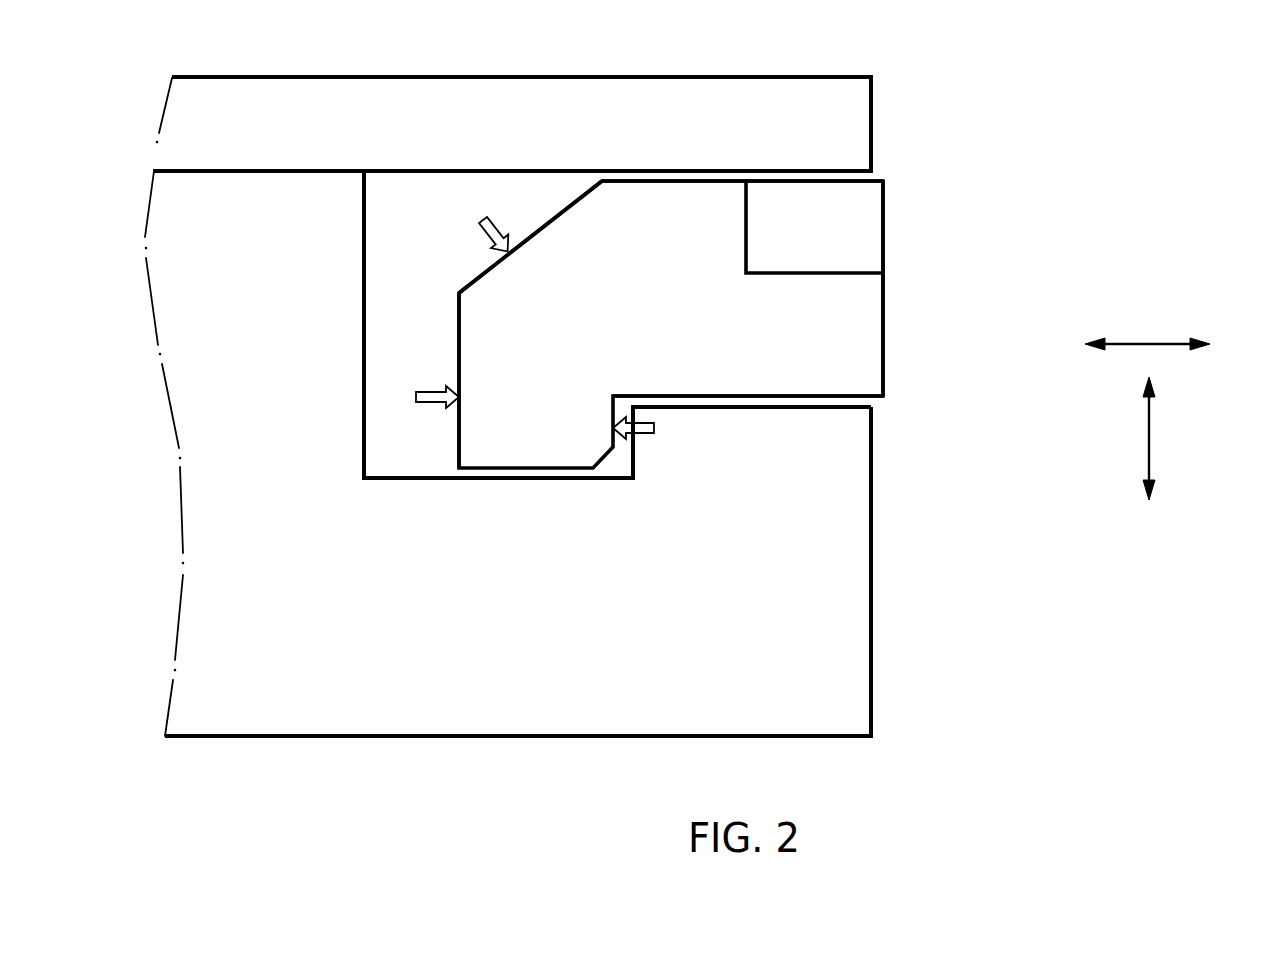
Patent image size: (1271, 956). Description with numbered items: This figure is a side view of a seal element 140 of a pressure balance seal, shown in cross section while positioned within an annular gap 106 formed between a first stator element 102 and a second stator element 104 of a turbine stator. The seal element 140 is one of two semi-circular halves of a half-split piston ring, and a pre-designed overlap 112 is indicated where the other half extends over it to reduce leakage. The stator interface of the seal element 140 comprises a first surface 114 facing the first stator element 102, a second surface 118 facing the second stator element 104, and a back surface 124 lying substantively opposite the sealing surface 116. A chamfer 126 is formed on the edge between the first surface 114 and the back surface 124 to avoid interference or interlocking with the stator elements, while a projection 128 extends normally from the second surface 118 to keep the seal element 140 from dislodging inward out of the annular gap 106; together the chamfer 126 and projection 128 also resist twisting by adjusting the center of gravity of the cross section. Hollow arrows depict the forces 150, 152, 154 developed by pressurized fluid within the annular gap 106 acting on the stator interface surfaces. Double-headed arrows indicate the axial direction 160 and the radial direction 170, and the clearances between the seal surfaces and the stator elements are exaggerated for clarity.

The first stator element 102 is at (683, 93).
The second stator element 104 is at (852, 628).
The annular gap 106 is at (373, 352).
The pre-designed overlap 112 is at (863, 232).
The first surface 114 is at (808, 180).
The sealing surface 116 is at (884, 366).
The second surface 118 is at (813, 400).
The back surface 124 is at (459, 318).
The chamfer 126 is at (566, 208).
The projection 128 is at (532, 479).
The second seal element 140 is at (865, 308).
The force 150 is at (480, 222).
The force 152 is at (420, 403).
The force 154 is at (656, 428).
The axial direction 160 is at (1151, 442).
The radial direction 170 is at (1150, 343).